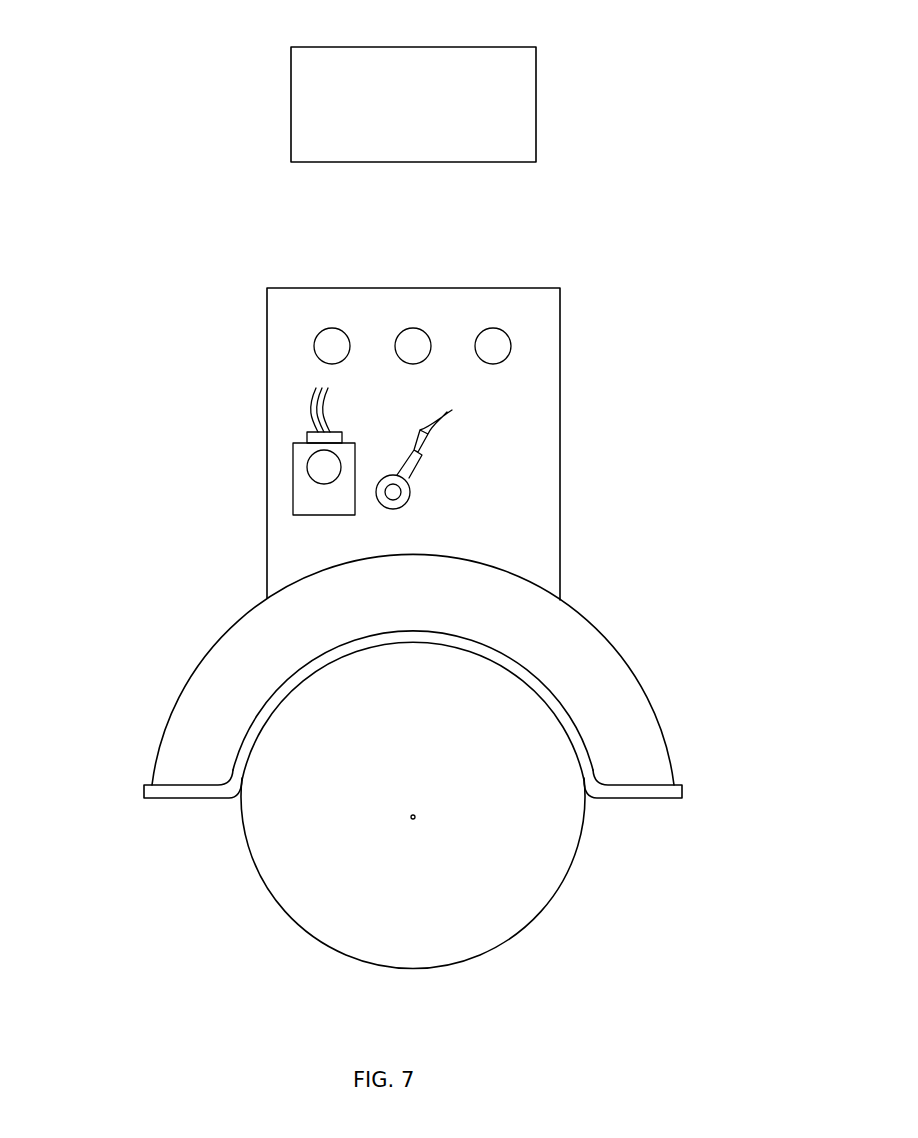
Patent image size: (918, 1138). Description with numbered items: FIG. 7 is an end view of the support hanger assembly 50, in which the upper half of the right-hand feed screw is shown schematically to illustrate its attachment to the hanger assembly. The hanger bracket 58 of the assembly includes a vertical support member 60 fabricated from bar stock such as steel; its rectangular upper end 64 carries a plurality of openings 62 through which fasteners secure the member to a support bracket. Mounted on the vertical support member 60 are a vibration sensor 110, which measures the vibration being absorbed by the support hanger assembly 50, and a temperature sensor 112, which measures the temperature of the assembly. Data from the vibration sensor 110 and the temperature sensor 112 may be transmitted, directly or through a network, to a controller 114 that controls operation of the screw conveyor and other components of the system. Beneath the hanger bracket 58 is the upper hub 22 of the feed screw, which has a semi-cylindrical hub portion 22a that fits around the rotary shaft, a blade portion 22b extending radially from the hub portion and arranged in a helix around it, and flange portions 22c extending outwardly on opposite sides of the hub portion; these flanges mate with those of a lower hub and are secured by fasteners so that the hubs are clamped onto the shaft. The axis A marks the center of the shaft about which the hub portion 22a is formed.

The controller 114 is at (399, 45).
The hanger bearing assembly 50 is at (605, 346).
The hanger bracket 58 is at (256, 290).
The vertical support member 60 is at (500, 523).
The upper end 64 is at (382, 305).
The openings 62 is at (487, 360).
The vibration sensor 110 is at (313, 500).
The temperature sensor 112 is at (413, 480).
The upper hub 22 is at (633, 673).
The semi-cylindrical hub portion 22a is at (502, 662).
The blade portion 22b is at (237, 677).
The flange portions 22c is at (188, 783).
The axis A is at (416, 818).